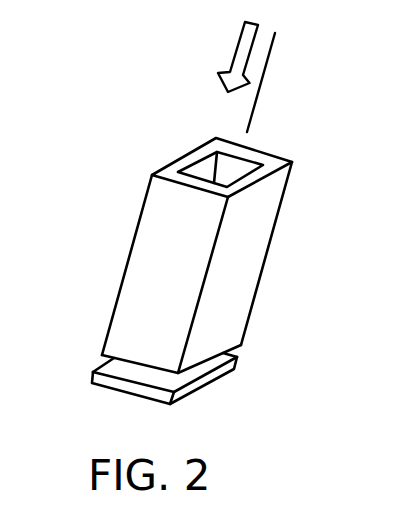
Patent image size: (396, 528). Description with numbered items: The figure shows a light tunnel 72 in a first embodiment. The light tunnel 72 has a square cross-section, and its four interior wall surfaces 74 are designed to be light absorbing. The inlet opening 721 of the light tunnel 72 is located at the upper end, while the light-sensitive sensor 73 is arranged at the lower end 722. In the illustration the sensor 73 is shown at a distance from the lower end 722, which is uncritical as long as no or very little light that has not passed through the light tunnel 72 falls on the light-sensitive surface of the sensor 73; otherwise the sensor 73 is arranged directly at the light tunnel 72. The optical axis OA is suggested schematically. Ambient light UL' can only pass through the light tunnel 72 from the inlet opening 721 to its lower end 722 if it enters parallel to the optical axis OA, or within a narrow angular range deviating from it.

The light tunnel 72 is at (278, 213).
The inlet opening 721 is at (198, 168).
The lower end 722 is at (102, 354).
The light-sensitive sensor 73 is at (138, 390).
The interior wall surfaces 74 is at (208, 165).
The ambient light UL' is at (216, 57).
The optical axis OA is at (261, 82).